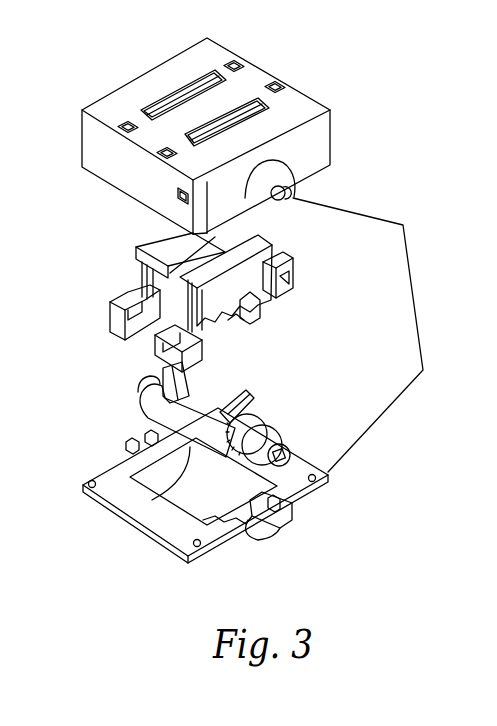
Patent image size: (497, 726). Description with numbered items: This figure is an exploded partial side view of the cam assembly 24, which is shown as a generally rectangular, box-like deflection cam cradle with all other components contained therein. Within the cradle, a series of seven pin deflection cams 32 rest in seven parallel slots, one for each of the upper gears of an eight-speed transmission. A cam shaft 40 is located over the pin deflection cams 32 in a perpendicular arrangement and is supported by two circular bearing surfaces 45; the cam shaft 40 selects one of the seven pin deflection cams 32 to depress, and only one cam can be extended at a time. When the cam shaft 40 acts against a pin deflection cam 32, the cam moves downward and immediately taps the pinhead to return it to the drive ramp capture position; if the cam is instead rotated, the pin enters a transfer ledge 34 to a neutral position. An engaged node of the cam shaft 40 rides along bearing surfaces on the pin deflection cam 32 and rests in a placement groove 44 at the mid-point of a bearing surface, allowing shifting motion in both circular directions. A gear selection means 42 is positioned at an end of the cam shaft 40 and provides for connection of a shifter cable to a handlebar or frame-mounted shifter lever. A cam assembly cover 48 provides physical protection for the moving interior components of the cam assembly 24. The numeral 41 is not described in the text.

The cam assembly 24 is at (122, 106).
The pin deflection cam 32 is at (247, 272).
The transfer ledge 34 is at (134, 247).
The cam shaft 40 is at (195, 403).
The guide member 41 is at (250, 322).
The gear selection means 42 is at (258, 420).
The placement groove 44 is at (235, 325).
The circular bearing surfaces 45 is at (403, 225).
The cam assembly cover 48 is at (125, 494).